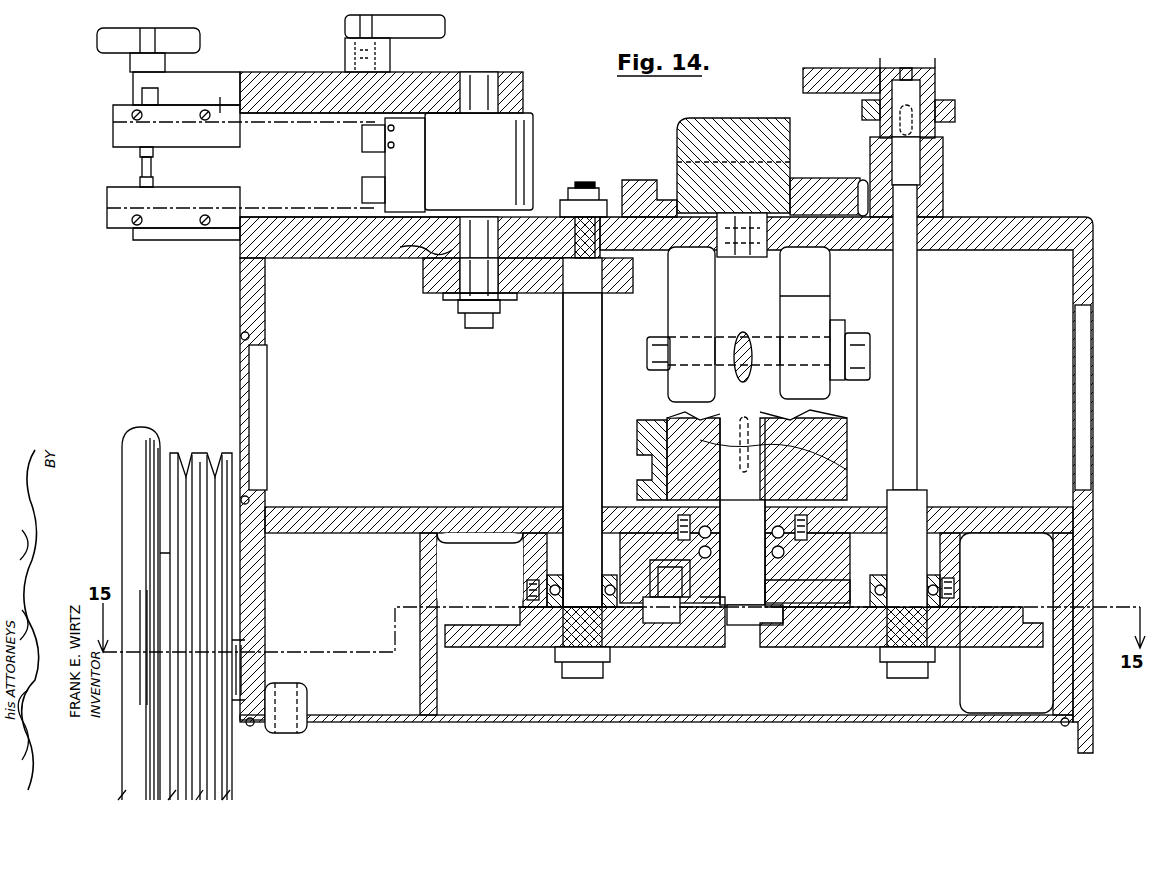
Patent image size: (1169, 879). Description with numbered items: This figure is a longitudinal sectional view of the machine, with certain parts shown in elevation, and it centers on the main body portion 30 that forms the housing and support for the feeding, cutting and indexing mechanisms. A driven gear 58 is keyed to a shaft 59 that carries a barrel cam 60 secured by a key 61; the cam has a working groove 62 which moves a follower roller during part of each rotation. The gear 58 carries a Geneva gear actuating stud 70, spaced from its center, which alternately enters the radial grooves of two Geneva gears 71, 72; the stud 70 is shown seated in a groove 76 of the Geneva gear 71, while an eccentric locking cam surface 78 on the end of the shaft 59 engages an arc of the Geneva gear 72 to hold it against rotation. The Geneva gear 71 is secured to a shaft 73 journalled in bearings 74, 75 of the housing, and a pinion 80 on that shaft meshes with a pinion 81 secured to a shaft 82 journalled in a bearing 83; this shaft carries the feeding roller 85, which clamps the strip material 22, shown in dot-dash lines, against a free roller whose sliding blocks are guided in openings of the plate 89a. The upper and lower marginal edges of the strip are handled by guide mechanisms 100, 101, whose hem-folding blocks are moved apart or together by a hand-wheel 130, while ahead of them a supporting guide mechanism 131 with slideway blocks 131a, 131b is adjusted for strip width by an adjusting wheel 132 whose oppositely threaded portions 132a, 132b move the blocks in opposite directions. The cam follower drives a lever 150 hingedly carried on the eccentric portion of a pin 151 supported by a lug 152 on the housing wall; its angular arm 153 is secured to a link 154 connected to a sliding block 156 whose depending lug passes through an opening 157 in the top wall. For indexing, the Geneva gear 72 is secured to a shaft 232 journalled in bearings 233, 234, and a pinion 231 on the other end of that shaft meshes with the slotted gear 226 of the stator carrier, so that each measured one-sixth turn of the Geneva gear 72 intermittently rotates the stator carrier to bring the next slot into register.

The strip material 22 is at (312, 122).
The main body portion 30 is at (1045, 232).
The gear 58 is at (828, 635).
The shaft 59 is at (838, 438).
The barrel cam 60 is at (845, 456).
The key 61 is at (744, 418).
The working groove 62 is at (648, 460).
The Geneva gear actuating stud 70 is at (670, 625).
The Geneva gear 71 is at (642, 648).
The Geneva gear 72 is at (980, 638).
The shaft 73 is at (568, 425).
The bearing 74 is at (572, 585).
The bearing 75 is at (610, 200).
The groove 76 is at (710, 622).
The locking cam surface 78 is at (778, 640).
The pinion 80 is at (610, 294).
The pinion 81 is at (514, 300).
The shaft 82 is at (460, 297).
The bearing 83 is at (420, 247).
The feeding roller 85 is at (500, 146).
The plate 89a is at (318, 78).
The guide mechanism for upper marginal portion 100 is at (362, 136).
The guide mechanism for lower marginal edge 101 is at (362, 192).
The hand-wheel 130 is at (445, 27).
The supporting guide mechanism 131 is at (213, 172).
The slideway block 131a is at (115, 132).
The slideway block 131b is at (112, 197).
The adjusting wheel 132 is at (100, 42).
The threaded portion 132a is at (140, 152).
The threaded portion 132b is at (140, 182).
The lever 150 is at (748, 345).
The pin 151 is at (655, 360).
The lug 152 is at (818, 270).
The angular arm 153 is at (752, 295).
The link 154 is at (740, 256).
The sliding block 156 is at (722, 132).
The opening 157 is at (772, 192).
The gear 226 is at (835, 76).
The pinion 231 is at (935, 92).
The shaft 232 is at (903, 204).
The bearing 233 is at (925, 158).
The bearing 234 is at (945, 585).